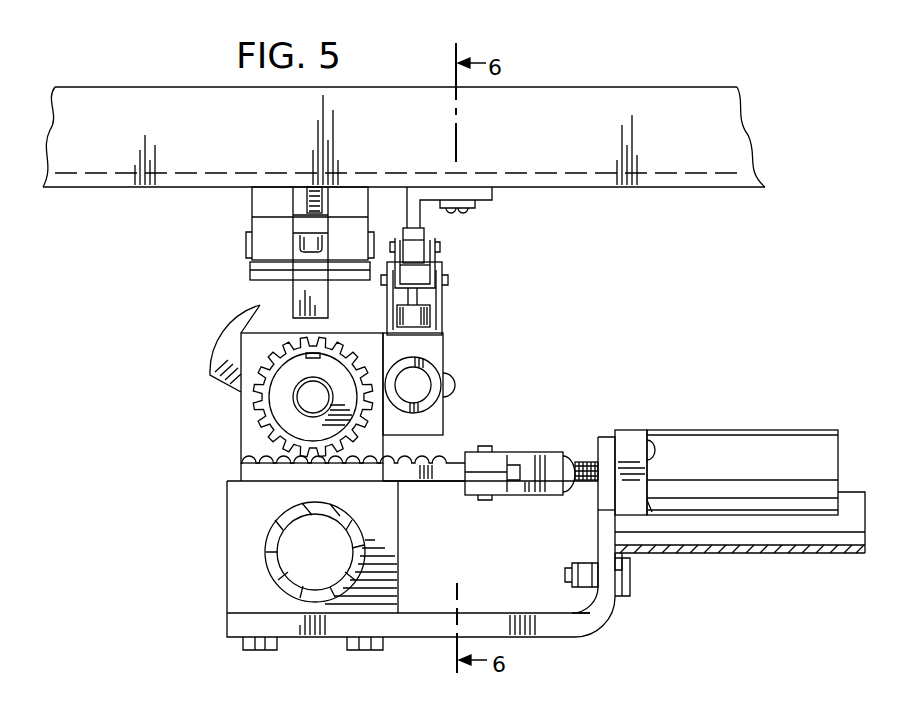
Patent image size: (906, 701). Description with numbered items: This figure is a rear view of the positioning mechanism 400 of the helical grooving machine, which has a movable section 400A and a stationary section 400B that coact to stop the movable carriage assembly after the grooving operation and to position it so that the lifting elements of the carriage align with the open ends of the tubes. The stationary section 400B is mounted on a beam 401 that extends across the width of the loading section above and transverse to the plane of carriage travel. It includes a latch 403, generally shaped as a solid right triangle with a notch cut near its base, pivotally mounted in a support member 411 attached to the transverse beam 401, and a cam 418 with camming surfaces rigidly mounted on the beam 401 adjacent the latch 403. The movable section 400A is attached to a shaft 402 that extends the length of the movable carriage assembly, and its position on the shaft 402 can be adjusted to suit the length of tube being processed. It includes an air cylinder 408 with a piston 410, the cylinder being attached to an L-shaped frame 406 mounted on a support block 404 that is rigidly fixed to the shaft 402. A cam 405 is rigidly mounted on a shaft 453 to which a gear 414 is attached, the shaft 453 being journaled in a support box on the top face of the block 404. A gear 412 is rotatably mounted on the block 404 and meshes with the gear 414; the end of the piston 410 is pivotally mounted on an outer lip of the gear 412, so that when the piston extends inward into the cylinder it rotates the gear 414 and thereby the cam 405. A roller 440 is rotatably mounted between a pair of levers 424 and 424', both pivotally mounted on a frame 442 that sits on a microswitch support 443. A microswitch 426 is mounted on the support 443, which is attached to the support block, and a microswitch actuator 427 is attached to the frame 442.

The beam 401 is at (112, 162).
The stationary section 400B is at (251, 214).
The support member 411 is at (265, 268).
The latch 403 is at (300, 308).
The cam 418 is at (413, 213).
The roller 440 is at (415, 235).
The lever 424 is at (406, 244).
The lever 424' is at (448, 266).
The microswitch actuator 427 is at (443, 298).
The microswitch 426 is at (415, 318).
The frame 442 is at (432, 321).
The cam 405 is at (228, 350).
The positioning mechanism 400 is at (240, 425).
The gear 414 is at (330, 355).
The shaft 453 is at (305, 397).
The microswitch support 443 is at (447, 413).
The gear 412 is at (441, 472).
The piston 410 is at (587, 460).
The movable section 400A is at (227, 610).
The shaft 402 is at (268, 552).
The support block 404 is at (399, 574).
The L-shaped frame 406 is at (590, 625).
The air cylinder 408 is at (745, 440).